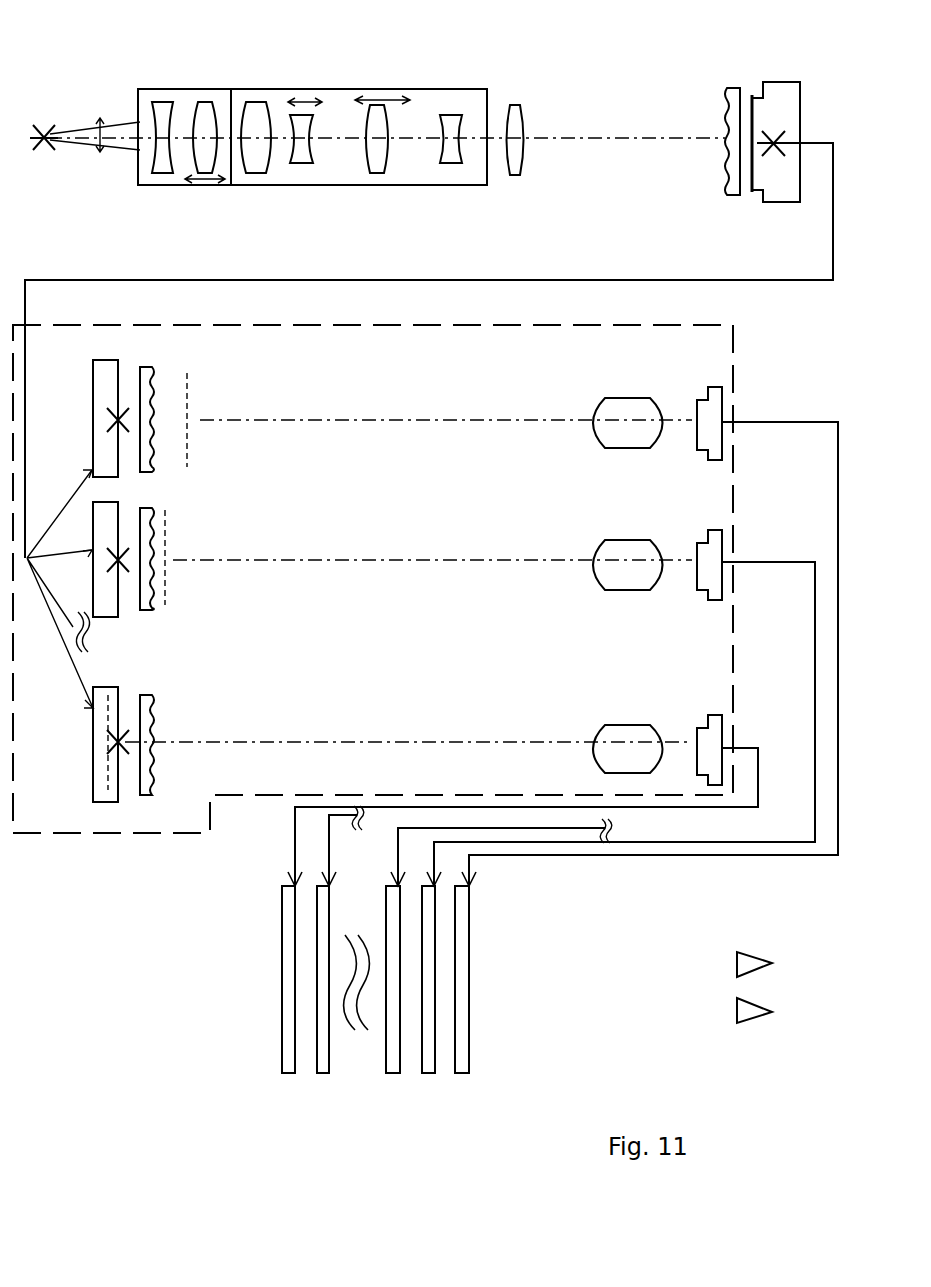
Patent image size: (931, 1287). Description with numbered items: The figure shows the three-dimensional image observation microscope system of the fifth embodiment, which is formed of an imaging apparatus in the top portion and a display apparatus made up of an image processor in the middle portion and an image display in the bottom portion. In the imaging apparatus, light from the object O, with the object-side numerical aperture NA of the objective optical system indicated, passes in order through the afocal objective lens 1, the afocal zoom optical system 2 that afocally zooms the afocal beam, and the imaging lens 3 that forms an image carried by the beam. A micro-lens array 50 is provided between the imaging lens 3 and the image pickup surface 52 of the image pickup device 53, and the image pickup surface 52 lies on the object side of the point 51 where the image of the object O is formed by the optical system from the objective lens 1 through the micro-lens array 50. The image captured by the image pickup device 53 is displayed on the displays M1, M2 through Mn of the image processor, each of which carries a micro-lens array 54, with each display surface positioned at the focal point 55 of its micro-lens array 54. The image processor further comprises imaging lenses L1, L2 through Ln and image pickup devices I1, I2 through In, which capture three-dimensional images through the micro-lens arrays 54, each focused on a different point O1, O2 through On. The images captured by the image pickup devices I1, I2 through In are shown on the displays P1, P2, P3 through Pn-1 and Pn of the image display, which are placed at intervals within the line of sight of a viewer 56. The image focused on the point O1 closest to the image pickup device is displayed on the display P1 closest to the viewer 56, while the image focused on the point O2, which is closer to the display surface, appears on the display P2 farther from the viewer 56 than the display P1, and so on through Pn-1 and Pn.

The object O is at (43, 133).
The object-side numerical aperture NA is at (91, 122).
The afocal objective lens 1 is at (182, 103).
The afocal zoom optical system 2 is at (331, 102).
The imaging lens 3 is at (513, 165).
The micro-lens array 50 is at (727, 92).
The image point 51 is at (774, 142).
The image pickup surface 52 is at (752, 95).
The image pickup device 53 is at (787, 118).
The display M1 is at (102, 382).
The display M2 is at (103, 528).
The display Mn is at (100, 768).
The focal point 55 is at (118, 558).
The micro-lens array 54 is at (147, 533).
The focused point O1 is at (187, 407).
The focused point O2 is at (165, 587).
The focused point On is at (110, 738).
The imaging lens L1 is at (617, 412).
The imaging lens L2 is at (605, 552).
The imaging lens Ln is at (618, 735).
The image pickup device I1 is at (708, 412).
The image pickup device I2 is at (708, 563).
The image pickup device In is at (712, 738).
The display Pn is at (282, 1048).
The display Pn-1 is at (322, 1055).
The display P3 is at (392, 1055).
The display P2 is at (428, 1048).
The display P1 is at (462, 1050).
The viewer 56 is at (777, 987).